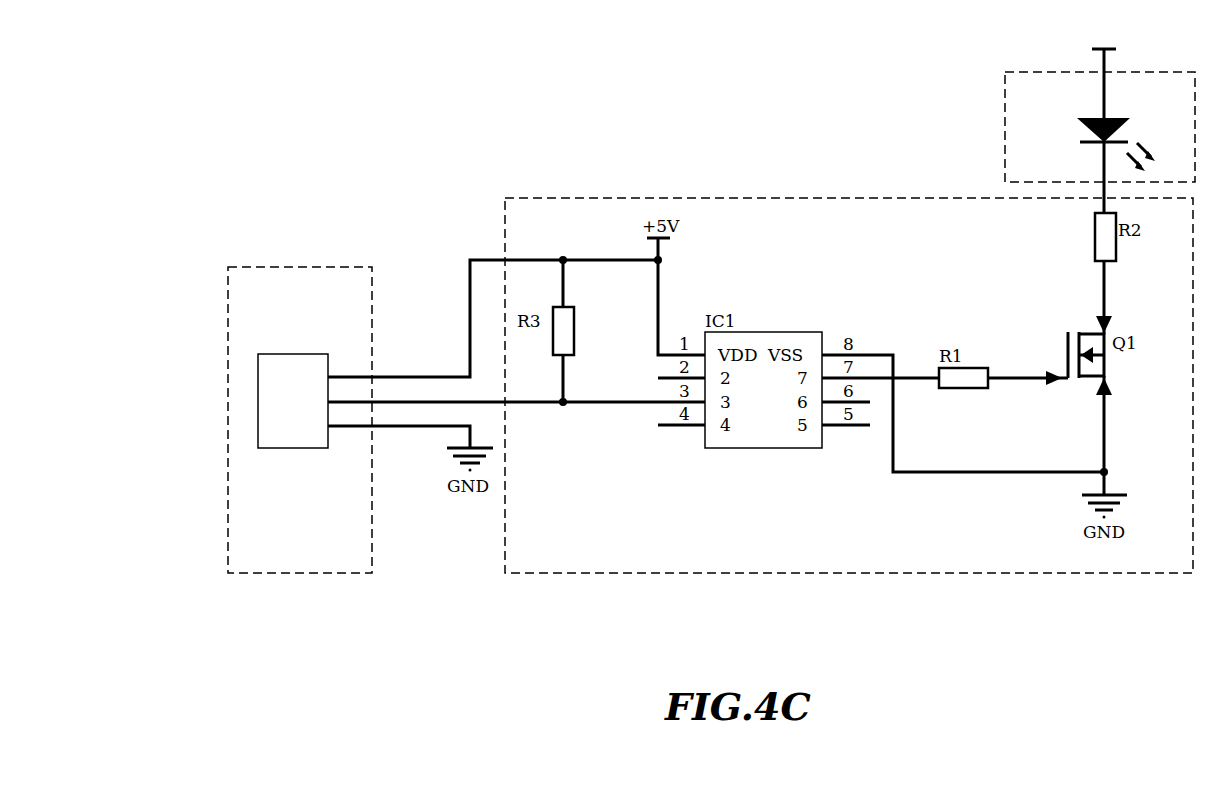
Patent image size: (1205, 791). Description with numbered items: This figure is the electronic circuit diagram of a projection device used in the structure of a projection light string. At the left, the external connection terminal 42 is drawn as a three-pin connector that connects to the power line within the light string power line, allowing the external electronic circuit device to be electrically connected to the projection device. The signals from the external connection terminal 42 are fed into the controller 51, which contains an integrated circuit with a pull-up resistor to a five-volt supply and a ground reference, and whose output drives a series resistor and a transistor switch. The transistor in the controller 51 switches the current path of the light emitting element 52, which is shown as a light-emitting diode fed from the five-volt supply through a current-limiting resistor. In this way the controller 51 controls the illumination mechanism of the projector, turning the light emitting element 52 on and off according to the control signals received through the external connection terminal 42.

The external connection terminal 42 is at (293, 267).
The controller 51 is at (761, 198).
The light emitting element 52 is at (1005, 140).